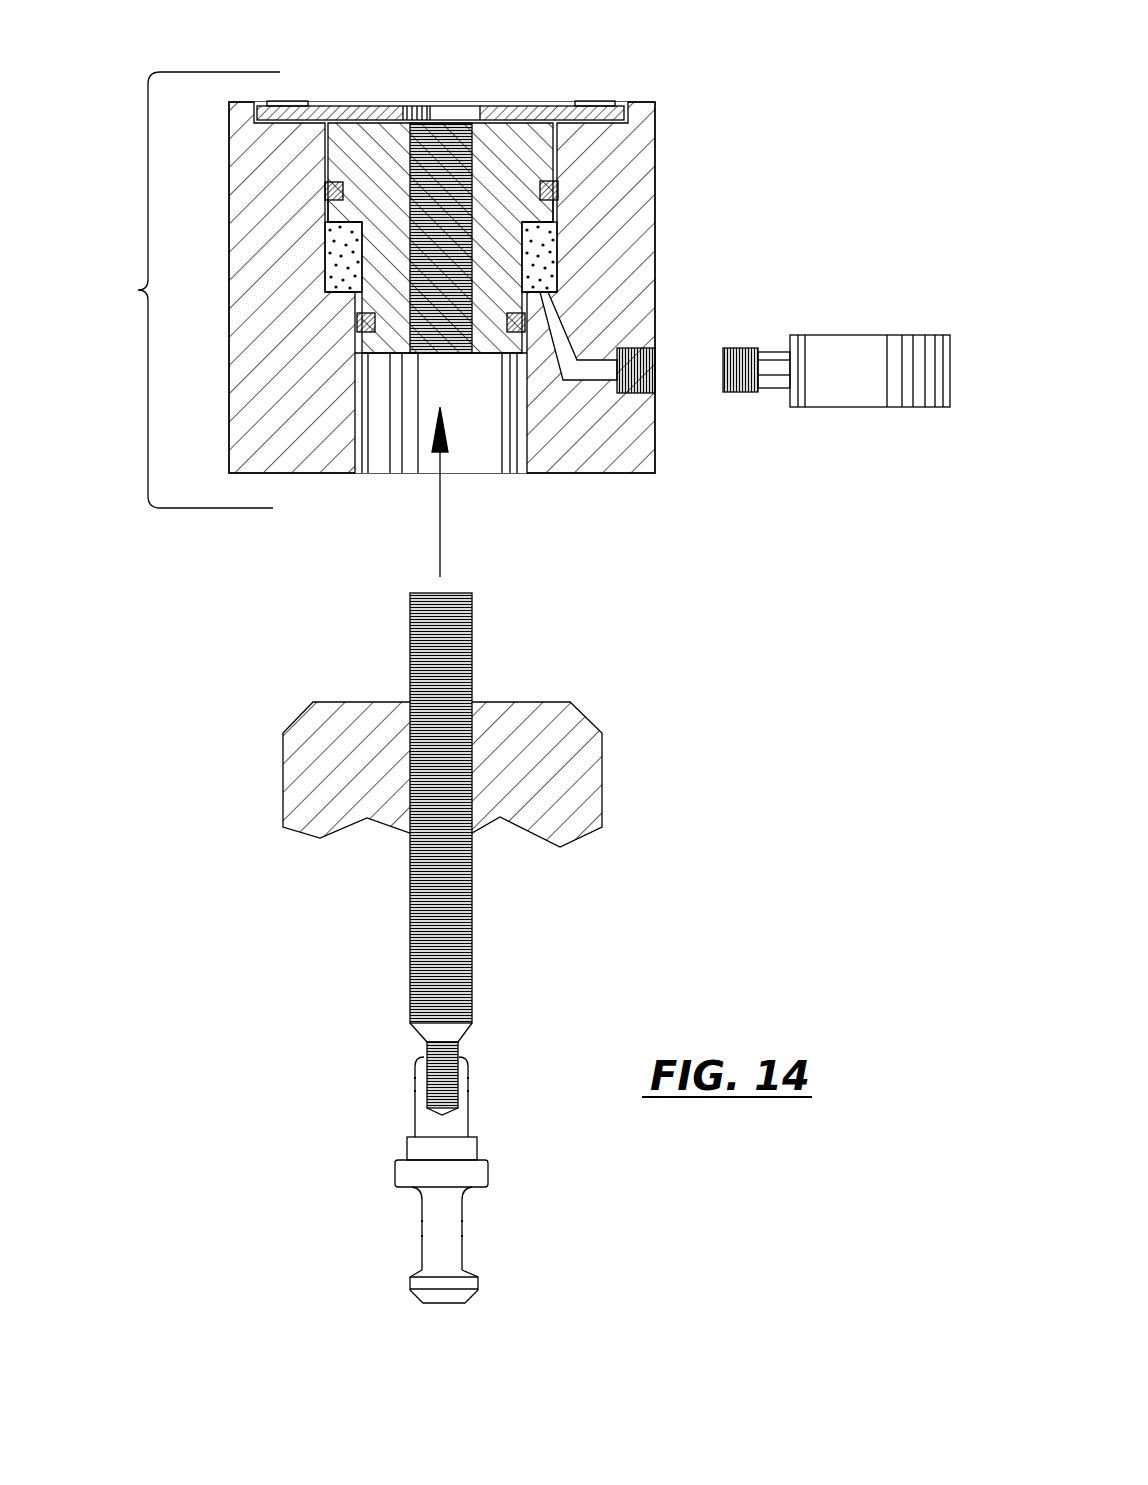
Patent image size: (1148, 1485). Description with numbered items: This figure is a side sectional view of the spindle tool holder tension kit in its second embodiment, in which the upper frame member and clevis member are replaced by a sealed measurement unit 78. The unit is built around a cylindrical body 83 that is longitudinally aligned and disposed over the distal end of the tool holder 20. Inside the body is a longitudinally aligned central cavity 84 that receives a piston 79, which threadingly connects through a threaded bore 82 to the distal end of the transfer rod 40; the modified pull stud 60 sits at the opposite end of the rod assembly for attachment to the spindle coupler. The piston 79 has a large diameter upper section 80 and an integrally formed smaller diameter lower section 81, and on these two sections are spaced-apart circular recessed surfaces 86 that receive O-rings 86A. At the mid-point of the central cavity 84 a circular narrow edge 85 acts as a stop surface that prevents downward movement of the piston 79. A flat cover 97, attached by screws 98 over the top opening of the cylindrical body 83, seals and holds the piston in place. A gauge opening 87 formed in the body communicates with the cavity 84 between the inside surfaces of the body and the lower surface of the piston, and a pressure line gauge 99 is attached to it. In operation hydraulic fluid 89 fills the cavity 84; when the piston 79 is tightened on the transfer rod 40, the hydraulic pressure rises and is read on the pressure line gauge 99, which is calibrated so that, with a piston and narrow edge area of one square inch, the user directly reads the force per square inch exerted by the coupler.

The sealed measurement unit 78 is at (138, 290).
The piston 79 is at (502, 160).
The large diameter upper section 80 is at (378, 152).
The smaller diameter lower section 81 is at (378, 343).
The threaded bore 82 is at (440, 337).
The cylindrical body 83 is at (626, 150).
The central cavity 84 is at (342, 262).
The circular narrow edge 85 is at (357, 295).
The circular recessed surfaces 86 is at (558, 190).
The O-rings 86A is at (558, 200).
The gauge opening 87 is at (655, 362).
The hydraulic fluid 89 is at (342, 275).
The flat cover 97 is at (354, 106).
The screws 98 is at (287, 100).
The pressure line gauge 99 is at (875, 343).
The transfer rod 40 is at (460, 636).
The tool holder 20 is at (553, 735).
The modified pull stud 60 is at (470, 1177).